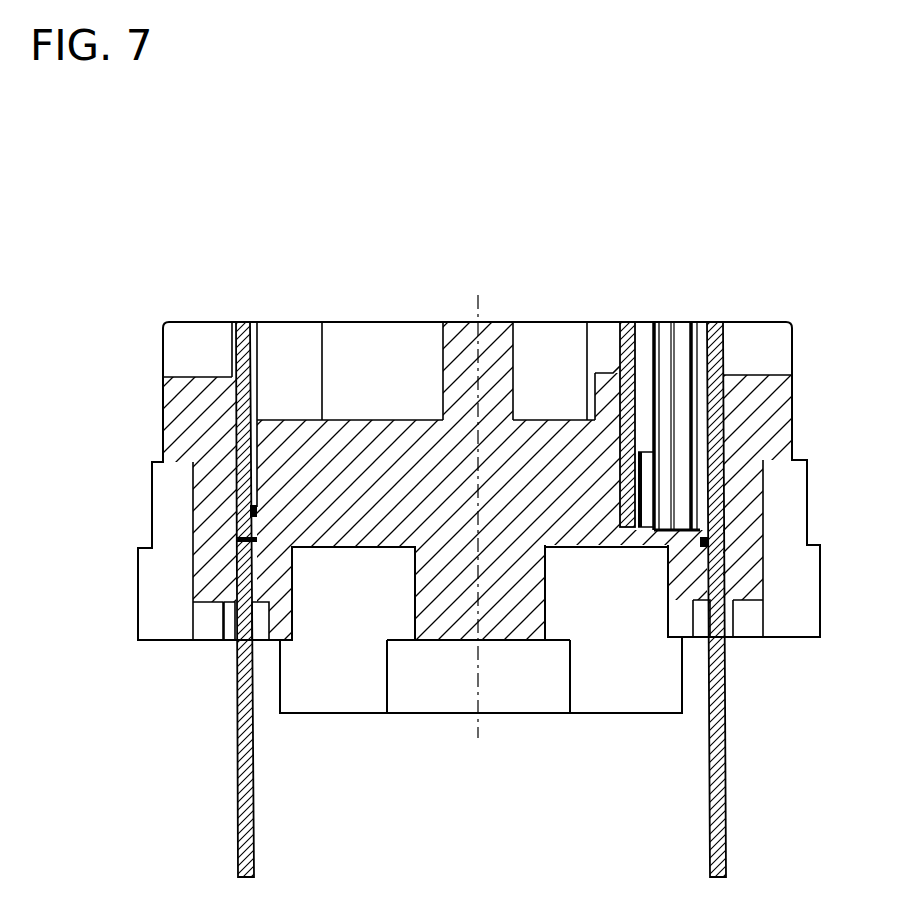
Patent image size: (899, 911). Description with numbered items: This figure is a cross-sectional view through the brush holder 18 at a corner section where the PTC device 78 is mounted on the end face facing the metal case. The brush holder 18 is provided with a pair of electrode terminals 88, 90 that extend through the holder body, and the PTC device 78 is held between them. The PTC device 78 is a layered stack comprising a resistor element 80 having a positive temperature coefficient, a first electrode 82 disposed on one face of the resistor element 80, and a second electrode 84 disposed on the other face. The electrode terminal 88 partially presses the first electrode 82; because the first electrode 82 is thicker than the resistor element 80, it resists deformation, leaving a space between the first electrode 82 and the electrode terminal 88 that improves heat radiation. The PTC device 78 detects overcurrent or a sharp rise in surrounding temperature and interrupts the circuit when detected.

The brush holder 18 is at (494, 162).
The PTC device 78 is at (732, 230).
The resistor element 80 is at (672, 321).
The first electrode 82 is at (652, 321).
The second electrode 84 is at (693, 321).
The electrode terminal 88 is at (620, 322).
The electrode terminal 90 is at (724, 321).